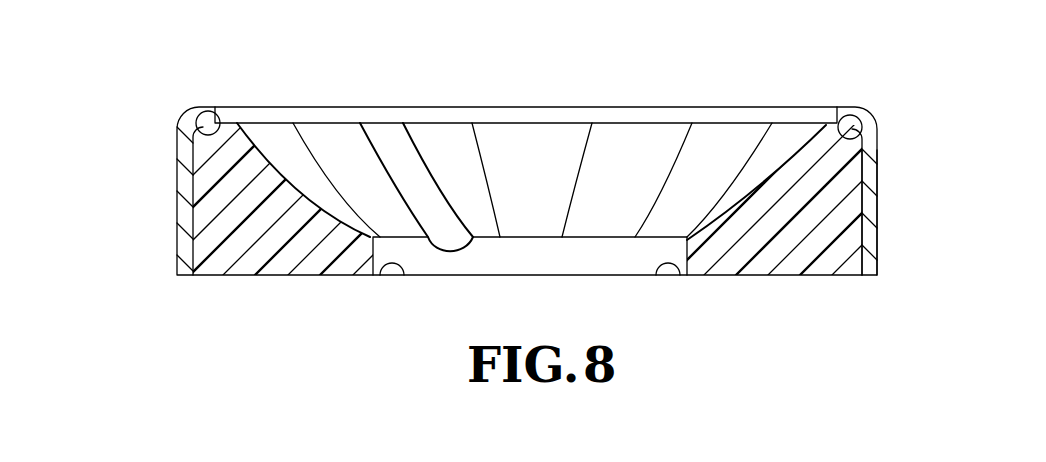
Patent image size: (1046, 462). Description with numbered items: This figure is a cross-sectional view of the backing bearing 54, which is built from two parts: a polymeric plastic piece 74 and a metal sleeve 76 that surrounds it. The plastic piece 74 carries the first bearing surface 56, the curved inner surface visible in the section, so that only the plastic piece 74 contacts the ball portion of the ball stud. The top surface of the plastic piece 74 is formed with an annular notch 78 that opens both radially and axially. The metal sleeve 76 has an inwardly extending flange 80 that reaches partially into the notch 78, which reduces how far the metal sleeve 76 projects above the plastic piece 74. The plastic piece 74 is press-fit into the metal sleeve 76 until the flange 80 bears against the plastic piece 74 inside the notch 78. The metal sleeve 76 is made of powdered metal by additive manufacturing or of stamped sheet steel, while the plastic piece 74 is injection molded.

The backing bearing 54 is at (134, 138).
The first bearing surface 56 is at (300, 187).
The plastic piece 74 is at (780, 250).
The metal sleeve 76 is at (877, 198).
The annular notch 78 is at (840, 124).
The inwardly extending flange 80 is at (210, 112).